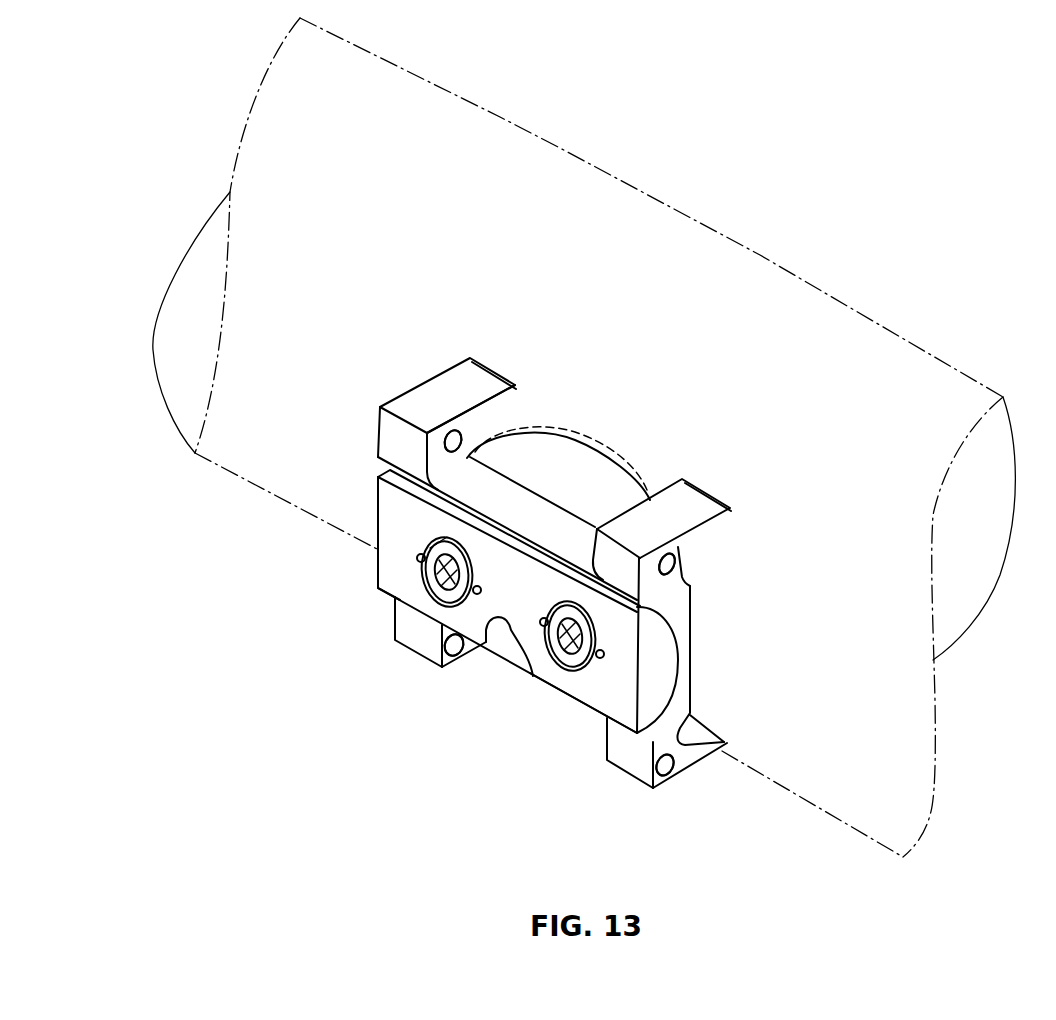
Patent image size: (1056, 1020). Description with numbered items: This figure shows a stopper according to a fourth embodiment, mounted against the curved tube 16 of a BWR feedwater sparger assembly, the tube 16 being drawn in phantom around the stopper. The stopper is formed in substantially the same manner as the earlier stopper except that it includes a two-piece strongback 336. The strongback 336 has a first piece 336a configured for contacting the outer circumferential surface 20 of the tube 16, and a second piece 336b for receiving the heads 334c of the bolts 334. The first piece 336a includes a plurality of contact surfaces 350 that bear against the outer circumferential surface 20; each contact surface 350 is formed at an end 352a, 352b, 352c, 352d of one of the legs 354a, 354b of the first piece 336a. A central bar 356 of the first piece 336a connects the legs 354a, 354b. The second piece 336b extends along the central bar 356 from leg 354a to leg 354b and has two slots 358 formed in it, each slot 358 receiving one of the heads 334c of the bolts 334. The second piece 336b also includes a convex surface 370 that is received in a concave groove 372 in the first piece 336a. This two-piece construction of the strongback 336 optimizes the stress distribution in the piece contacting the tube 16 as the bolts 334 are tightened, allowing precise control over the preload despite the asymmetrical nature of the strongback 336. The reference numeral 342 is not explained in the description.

The curved tube 16 is at (887, 326).
The outer circumferential surface 20 is at (352, 430).
The bolts 334 is at (432, 592).
The heads 334c is at (450, 538).
The two-piece strongback 336 is at (363, 597).
The first piece 336a is at (707, 778).
The second piece 336b is at (563, 701).
The clamp body 342 is at (616, 537).
The contact surfaces 350 is at (465, 537).
The end 352a is at (466, 424).
The end 352b is at (497, 636).
The end 352c is at (702, 547).
The end 352d is at (727, 747).
The leg 354a is at (362, 468).
The leg 354b is at (714, 672).
The central bar 356 is at (606, 494).
The slots 358 is at (533, 530).
The convex surface 370 is at (648, 728).
The concave groove 372 is at (695, 634).